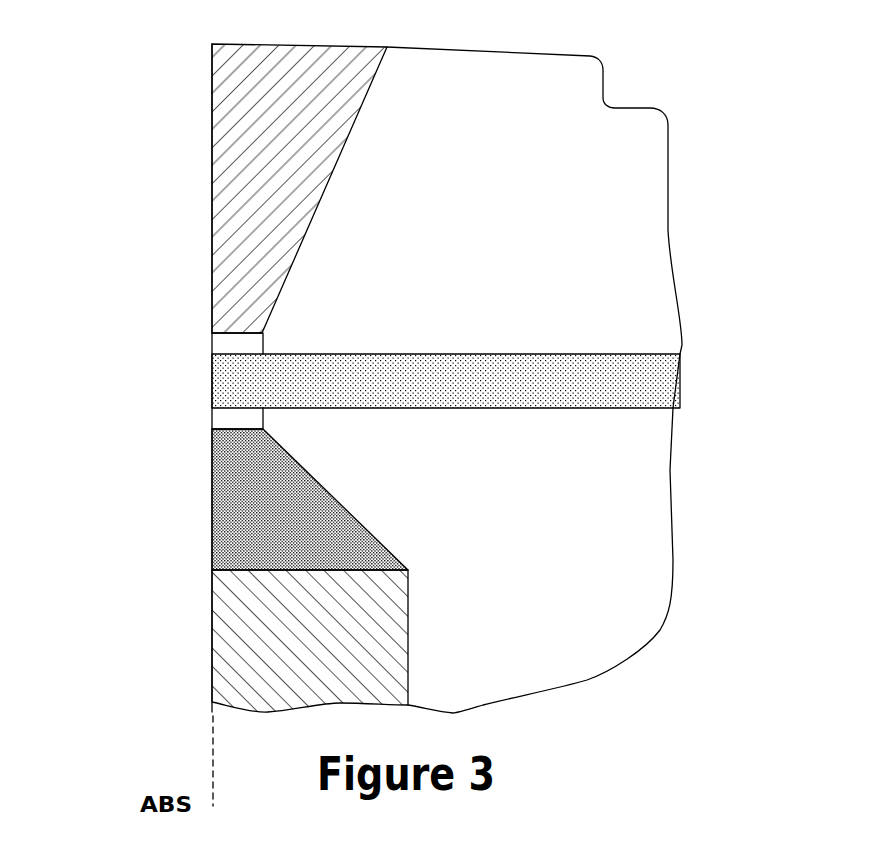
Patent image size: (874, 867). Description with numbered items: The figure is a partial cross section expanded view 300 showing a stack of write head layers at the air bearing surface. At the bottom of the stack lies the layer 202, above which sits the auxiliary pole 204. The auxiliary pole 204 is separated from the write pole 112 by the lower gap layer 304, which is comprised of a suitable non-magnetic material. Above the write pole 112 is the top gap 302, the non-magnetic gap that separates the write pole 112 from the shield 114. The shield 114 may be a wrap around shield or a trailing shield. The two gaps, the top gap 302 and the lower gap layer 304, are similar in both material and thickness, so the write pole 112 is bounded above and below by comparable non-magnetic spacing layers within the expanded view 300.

The partial cross section expanded view 300 is at (697, 178).
The shield 114 is at (237, 180).
The top gap 302 is at (213, 343).
The write pole 112 is at (310, 372).
The lower gap layer 304 is at (213, 418).
The auxiliary pole 204 is at (228, 507).
The substrate / lower shield layer 202 is at (212, 643).